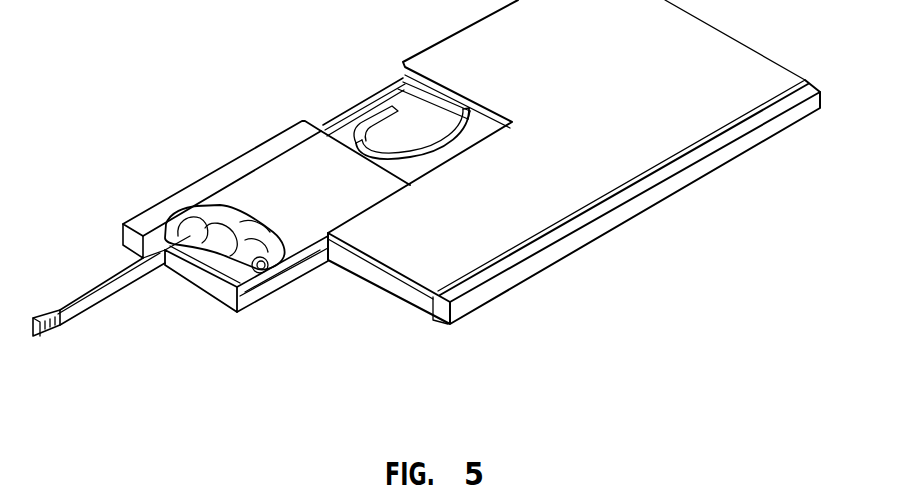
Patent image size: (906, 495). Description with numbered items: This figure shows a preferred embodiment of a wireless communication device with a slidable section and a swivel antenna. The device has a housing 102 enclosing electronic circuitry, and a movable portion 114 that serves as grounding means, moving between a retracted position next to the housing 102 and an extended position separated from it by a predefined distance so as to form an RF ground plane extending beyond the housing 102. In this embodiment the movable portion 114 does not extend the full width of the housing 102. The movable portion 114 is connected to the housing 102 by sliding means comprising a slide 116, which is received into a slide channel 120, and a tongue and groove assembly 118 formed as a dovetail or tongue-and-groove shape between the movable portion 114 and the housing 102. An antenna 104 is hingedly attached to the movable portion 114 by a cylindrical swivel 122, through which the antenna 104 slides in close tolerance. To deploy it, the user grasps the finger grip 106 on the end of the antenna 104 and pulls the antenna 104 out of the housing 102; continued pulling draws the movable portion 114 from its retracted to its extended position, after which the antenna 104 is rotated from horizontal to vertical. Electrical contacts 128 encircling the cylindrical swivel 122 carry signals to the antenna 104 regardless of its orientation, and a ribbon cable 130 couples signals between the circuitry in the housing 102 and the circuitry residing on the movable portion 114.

The housing 102 is at (625, 213).
The antenna 104 is at (115, 290).
The finger grip 106 is at (48, 335).
The movable portion 114 is at (252, 298).
The slide 116 is at (337, 118).
The tongue and groove assembly 118 is at (343, 268).
The slide channel 120 is at (400, 65).
The cylindrical swivel 122 is at (193, 222).
The electrical contacts 128 is at (293, 242).
The ribbon cable 130 is at (397, 150).